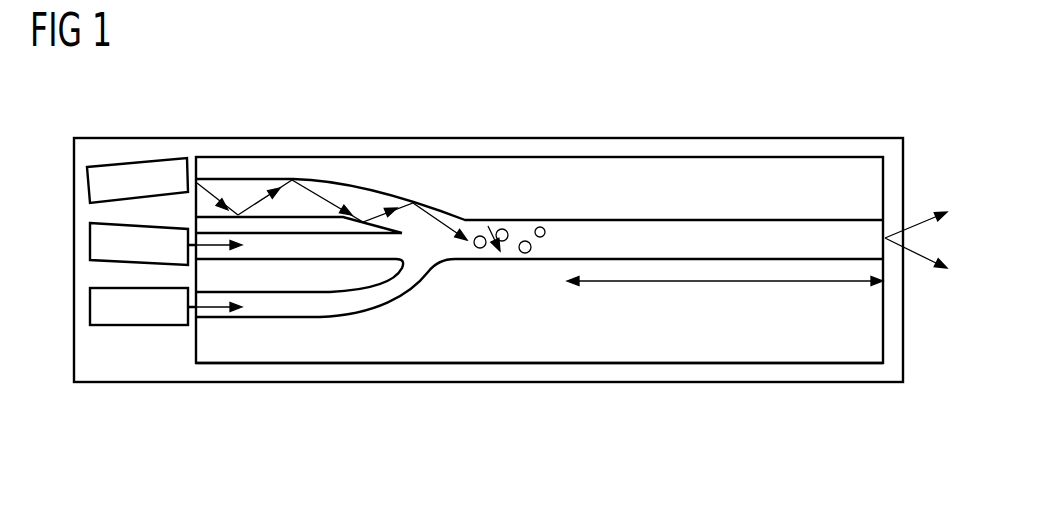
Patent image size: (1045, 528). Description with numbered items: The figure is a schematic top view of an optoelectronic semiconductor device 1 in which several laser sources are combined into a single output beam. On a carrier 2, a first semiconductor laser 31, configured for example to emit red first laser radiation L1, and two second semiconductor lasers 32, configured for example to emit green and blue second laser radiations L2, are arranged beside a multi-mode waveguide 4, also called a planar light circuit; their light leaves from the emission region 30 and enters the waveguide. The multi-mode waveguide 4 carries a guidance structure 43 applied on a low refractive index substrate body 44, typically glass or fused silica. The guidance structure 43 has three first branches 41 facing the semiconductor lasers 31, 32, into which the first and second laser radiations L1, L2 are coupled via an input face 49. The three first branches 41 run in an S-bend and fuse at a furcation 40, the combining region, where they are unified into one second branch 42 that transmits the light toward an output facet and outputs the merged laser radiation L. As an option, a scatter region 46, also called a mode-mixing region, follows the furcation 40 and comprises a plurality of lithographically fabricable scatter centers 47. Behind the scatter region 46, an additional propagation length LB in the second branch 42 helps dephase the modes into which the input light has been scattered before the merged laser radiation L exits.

The optoelectronic semiconductor device 1 is at (834, 94).
The carrier 2 is at (142, 373).
The multi-mode waveguide 4 is at (576, 152).
The emission region 30 is at (113, 208).
The first semiconductor laser 31 is at (108, 162).
The second semiconductor laser 32 is at (90, 242).
The furcation 40 is at (437, 263).
The first branch 41 is at (368, 315).
The second branch 42 is at (740, 219).
The guidance structure 43 is at (807, 229).
The substrate body 44 is at (825, 355).
The scatter region 46 is at (515, 245).
The scatter center 47 is at (525, 255).
The input face 49 is at (200, 185).
The first laser radiation L1 is at (263, 193).
The second laser radiation L2 is at (207, 247).
The additional propagation length LB is at (725, 298).
The merged laser radiation L is at (913, 245).